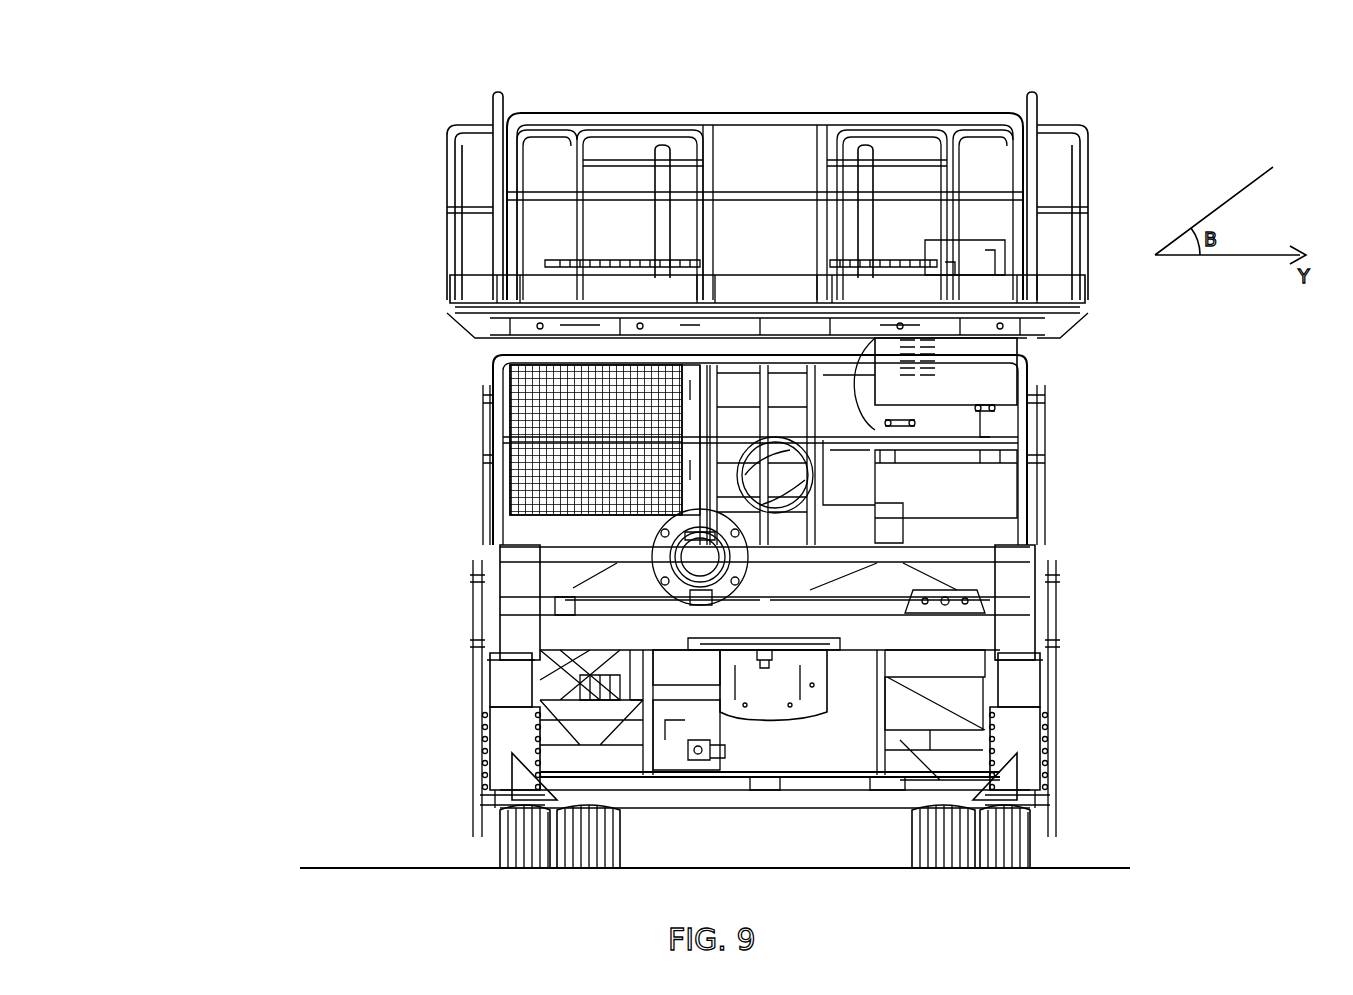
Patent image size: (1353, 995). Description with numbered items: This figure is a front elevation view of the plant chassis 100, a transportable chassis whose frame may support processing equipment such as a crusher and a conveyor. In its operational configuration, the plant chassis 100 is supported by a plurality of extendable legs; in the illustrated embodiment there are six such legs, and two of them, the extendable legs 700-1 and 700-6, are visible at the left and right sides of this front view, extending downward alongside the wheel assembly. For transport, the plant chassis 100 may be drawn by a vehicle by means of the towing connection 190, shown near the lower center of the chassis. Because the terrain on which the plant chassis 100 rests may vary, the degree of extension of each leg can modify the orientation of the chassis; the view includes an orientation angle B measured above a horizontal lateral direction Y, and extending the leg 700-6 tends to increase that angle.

The plant chassis 100 is at (114, 116).
The extendable leg 700-1 is at (512, 690).
The extendable leg 700-6 is at (1017, 695).
The towing connection 190 is at (763, 665).